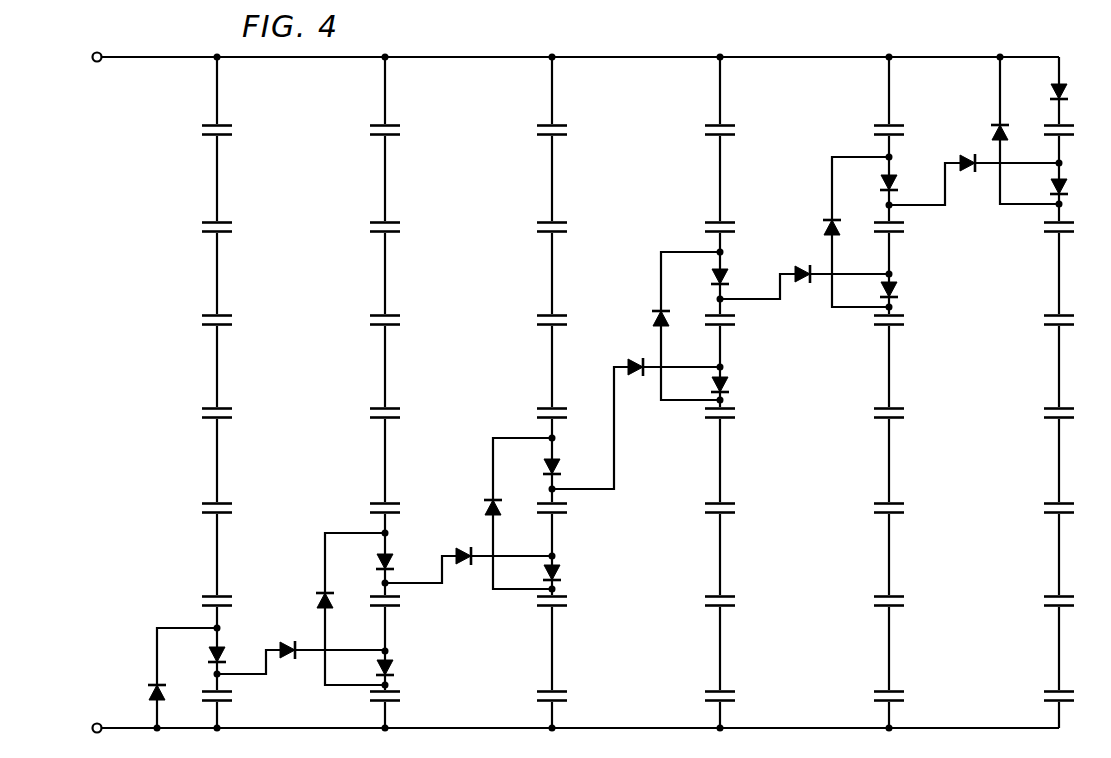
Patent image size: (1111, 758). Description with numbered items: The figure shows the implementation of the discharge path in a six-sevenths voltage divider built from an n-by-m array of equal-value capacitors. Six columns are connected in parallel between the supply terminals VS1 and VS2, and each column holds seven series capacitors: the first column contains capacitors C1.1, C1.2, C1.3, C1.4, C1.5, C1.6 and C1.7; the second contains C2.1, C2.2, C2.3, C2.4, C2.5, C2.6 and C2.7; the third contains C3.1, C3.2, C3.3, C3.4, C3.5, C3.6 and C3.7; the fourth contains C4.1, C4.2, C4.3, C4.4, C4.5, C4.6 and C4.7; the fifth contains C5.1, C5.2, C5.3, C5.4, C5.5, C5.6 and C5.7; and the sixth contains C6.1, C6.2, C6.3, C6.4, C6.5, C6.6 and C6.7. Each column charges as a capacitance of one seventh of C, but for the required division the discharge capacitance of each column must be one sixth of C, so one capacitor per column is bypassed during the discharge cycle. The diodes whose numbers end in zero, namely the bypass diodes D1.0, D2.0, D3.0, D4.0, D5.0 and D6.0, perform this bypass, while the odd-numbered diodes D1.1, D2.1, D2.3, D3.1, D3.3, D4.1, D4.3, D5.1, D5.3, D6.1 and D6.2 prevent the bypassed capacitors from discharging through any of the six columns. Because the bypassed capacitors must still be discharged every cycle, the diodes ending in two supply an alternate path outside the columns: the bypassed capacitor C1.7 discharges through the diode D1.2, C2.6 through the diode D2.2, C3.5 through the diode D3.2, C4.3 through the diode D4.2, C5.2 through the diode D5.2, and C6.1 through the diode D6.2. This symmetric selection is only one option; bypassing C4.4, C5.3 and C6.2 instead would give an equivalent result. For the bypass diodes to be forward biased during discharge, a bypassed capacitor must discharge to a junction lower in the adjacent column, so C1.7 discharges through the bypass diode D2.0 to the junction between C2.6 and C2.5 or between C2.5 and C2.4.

The first supply terminal VS1 is at (81, 57).
The second supply terminal VS2 is at (81, 721).
The capacitor C1.1 is at (228, 130).
The capacitor C1.2 is at (228, 227).
The capacitor C1.3 is at (228, 320).
The capacitor C1.4 is at (228, 413).
The capacitor C1.5 is at (228, 508).
The capacitor C1.6 is at (228, 601).
The bypassed capacitor C1.7 is at (228, 696).
The capacitor C2.1 is at (397, 130).
The capacitor C2.2 is at (397, 227).
The capacitor C2.3 is at (397, 320).
The capacitor C2.4 is at (397, 413).
The capacitor C2.5 is at (397, 508).
The bypassed capacitor C2.6 is at (397, 601).
The capacitor C2.7 is at (397, 696).
The capacitor C3.1 is at (564, 130).
The capacitor C3.2 is at (564, 227).
The capacitor C3.3 is at (564, 320).
The capacitor C3.4 is at (564, 413).
The bypassed capacitor C3.5 is at (564, 508).
The capacitor C3.6 is at (564, 601).
The capacitor C3.7 is at (564, 696).
The capacitor C4.1 is at (732, 130).
The capacitor C4.2 is at (732, 227).
The bypassed capacitor C4.3 is at (732, 320).
The capacitor C4.4 is at (732, 413).
The capacitor C4.5 is at (732, 508).
The capacitor C4.6 is at (732, 601).
The capacitor C4.7 is at (732, 696).
The capacitor C5.1 is at (901, 130).
The bypassed capacitor C5.2 is at (901, 227).
The capacitor C5.3 is at (901, 320).
The capacitor C5.4 is at (901, 413).
The capacitor C5.5 is at (901, 508).
The capacitor C5.6 is at (901, 601).
The capacitor C5.7 is at (901, 696).
The bypassed capacitor C6.1 is at (1071, 130).
The capacitor C6.2 is at (1071, 227).
The capacitor C6.3 is at (1071, 320).
The capacitor C6.4 is at (1071, 413).
The capacitor C6.5 is at (1071, 508).
The capacitor C6.6 is at (1071, 601).
The capacitor C6.7 is at (1071, 696).
The bypass diode D1.0 is at (169, 678).
The blocking diode D1.1 is at (232, 662).
The alternate discharge diode D1.2 is at (301, 661).
The bypass diode D2.0 is at (335, 609).
The blocking diode D2.1 is at (401, 570).
The alternate discharge diode D2.2 is at (470, 566).
The blocking diode D2.3 is at (402, 665).
The bypass diode D3.0 is at (503, 514).
The blocking diode D3.1 is at (568, 475).
The alternate discharge diode D3.2 is at (638, 423).
The blocking diode D3.3 is at (569, 576).
The bypass diode D4.0 is at (671, 326).
The blocking diode D4.1 is at (736, 285).
The alternate discharge diode D4.2 is at (806, 284).
The blocking diode D4.3 is at (737, 386).
The bypass diode D5.0 is at (841, 232).
The blocking diode D5.1 is at (904, 192).
The alternate discharge diode D5.2 is at (976, 179).
The blocking diode D5.3 is at (907, 291).
The bypass diode D6.0 is at (1010, 131).
The blocking diode D6.1 is at (1075, 93).
The alternate discharge diode D6.2 is at (1077, 188).